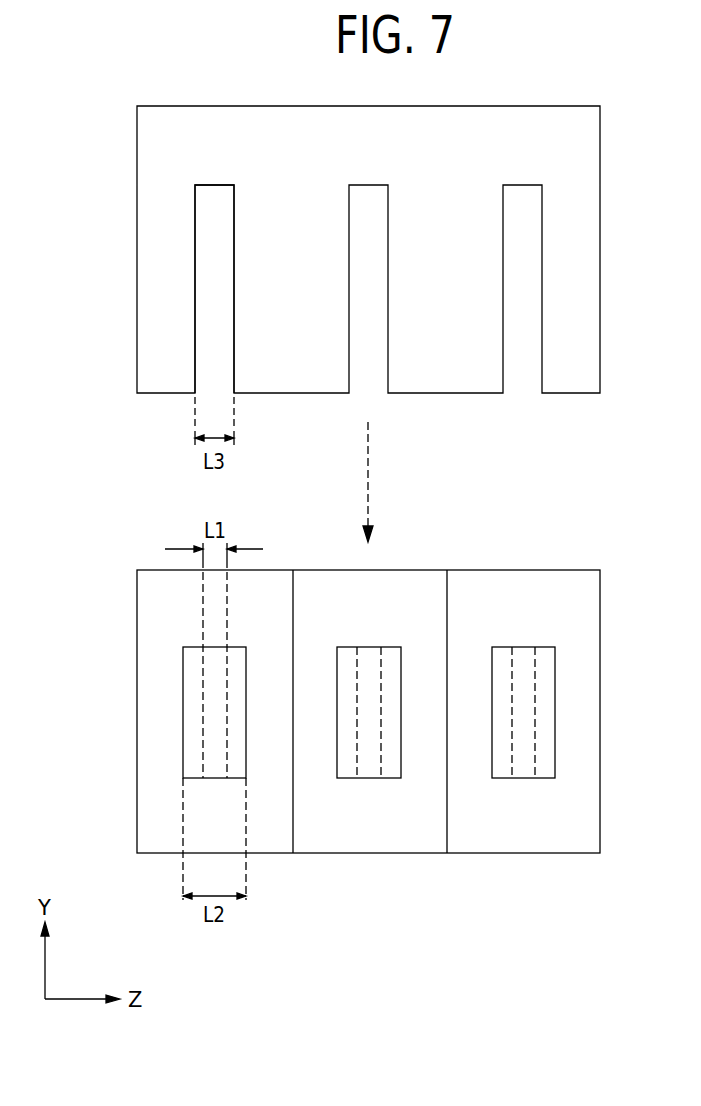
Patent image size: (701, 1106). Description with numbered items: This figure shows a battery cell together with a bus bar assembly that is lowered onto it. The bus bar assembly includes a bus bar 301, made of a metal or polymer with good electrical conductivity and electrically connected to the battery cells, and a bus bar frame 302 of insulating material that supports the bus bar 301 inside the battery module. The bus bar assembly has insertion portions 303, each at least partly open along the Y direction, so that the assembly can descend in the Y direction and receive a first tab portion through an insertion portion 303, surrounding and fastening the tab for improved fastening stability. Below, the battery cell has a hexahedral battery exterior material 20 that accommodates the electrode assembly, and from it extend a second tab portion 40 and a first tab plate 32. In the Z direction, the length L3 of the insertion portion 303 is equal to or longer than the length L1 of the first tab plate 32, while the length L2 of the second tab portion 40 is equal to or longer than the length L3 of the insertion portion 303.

The bus bar 301 is at (160, 266).
The bus bar frame 302 is at (205, 146).
The insertion portion 303 is at (213, 306).
The battery exterior material 20 is at (151, 651).
The second tab portion 40 is at (192, 695).
The first tab plate 32 is at (212, 733).